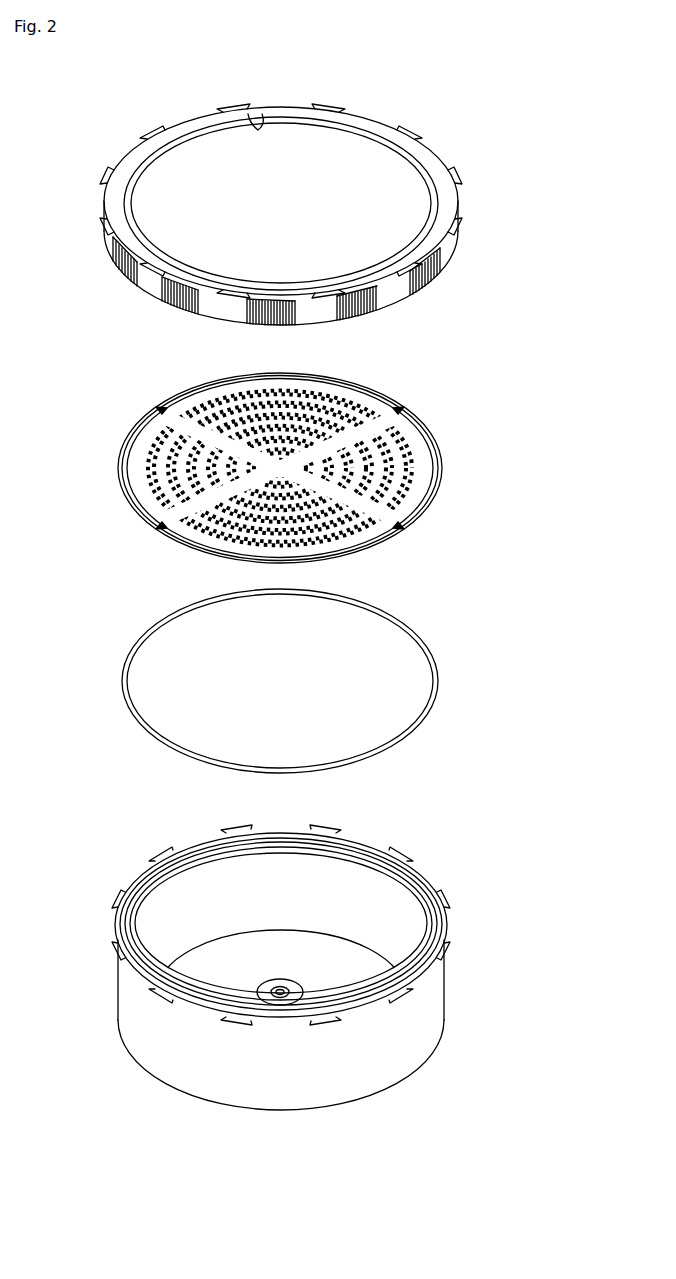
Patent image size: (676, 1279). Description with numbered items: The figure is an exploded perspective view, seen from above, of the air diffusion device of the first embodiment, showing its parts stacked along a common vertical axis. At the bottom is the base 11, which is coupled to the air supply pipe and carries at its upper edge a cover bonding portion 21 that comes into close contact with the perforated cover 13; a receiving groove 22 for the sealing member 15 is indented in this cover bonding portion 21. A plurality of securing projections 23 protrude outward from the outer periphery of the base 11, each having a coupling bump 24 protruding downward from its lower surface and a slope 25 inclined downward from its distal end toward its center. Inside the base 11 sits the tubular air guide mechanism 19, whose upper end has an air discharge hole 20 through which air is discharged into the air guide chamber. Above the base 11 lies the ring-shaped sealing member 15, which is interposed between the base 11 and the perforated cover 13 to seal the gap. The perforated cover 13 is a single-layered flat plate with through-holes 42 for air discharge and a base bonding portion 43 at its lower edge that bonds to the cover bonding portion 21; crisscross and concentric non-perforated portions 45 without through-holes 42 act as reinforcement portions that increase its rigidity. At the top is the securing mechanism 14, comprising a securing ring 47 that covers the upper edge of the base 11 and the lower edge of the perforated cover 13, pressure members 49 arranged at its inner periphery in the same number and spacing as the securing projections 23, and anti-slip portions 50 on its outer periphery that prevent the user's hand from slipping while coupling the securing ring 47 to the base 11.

The base 11 is at (310, 967).
The perforated cover 13 is at (311, 475).
The securing mechanism 14 is at (308, 196).
The sealing member 15 is at (438, 681).
The air guide mechanism 19 is at (258, 978).
The air discharge hole 20 is at (282, 951).
The cover bonding portion 21 is at (422, 882).
The receiving groove 22 is at (436, 925).
The securing projections 23 is at (444, 945).
The coupling bump 24 is at (392, 1008).
The slope 25 is at (412, 990).
The through-holes 42 is at (432, 482).
The base bonding portion 43 is at (440, 458).
The non-perforated portion 45 is at (160, 412).
The securing ring 47 is at (366, 122).
The pressure members 49 is at (257, 132).
The anti-slip portions 50 is at (444, 262).